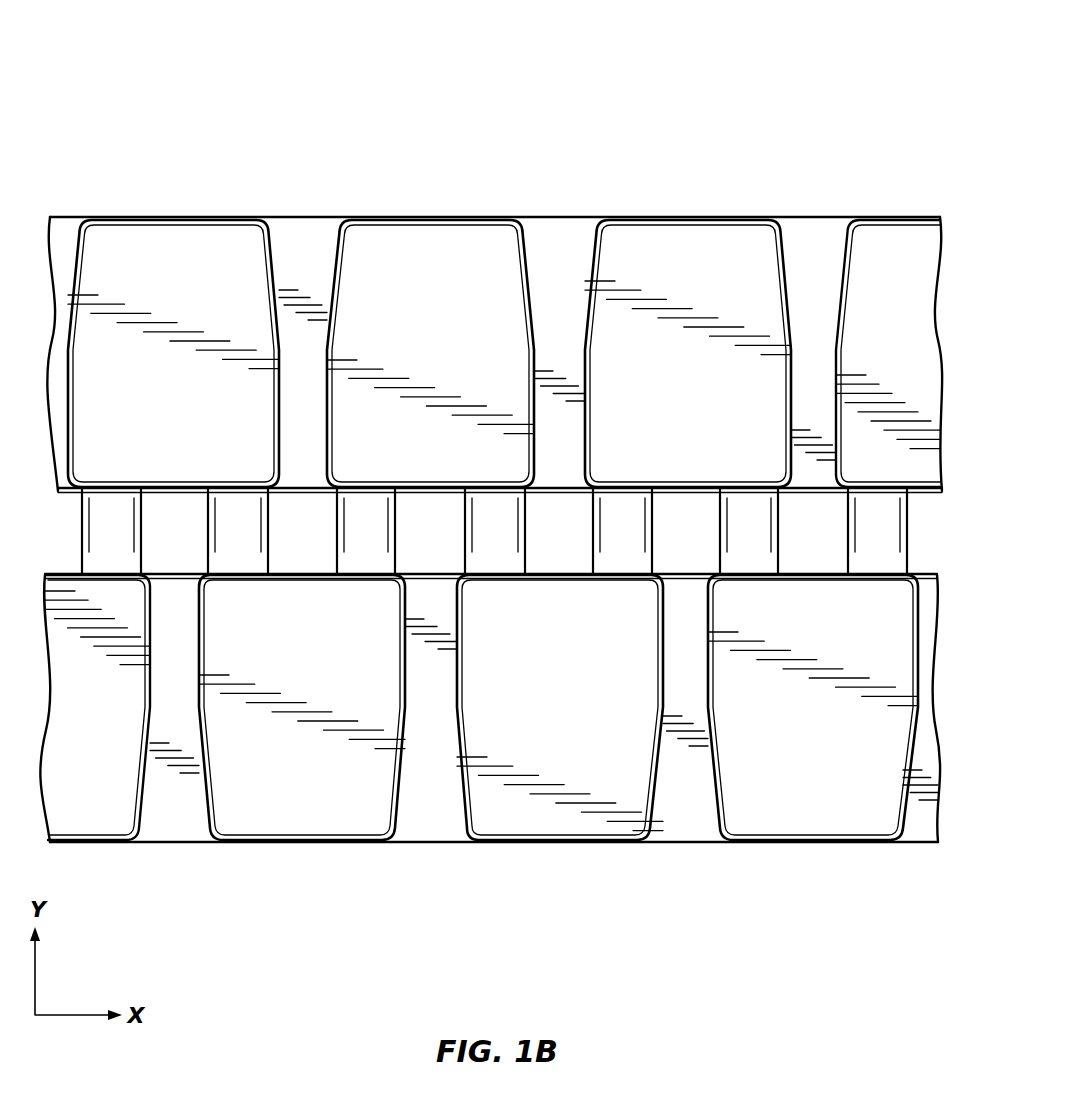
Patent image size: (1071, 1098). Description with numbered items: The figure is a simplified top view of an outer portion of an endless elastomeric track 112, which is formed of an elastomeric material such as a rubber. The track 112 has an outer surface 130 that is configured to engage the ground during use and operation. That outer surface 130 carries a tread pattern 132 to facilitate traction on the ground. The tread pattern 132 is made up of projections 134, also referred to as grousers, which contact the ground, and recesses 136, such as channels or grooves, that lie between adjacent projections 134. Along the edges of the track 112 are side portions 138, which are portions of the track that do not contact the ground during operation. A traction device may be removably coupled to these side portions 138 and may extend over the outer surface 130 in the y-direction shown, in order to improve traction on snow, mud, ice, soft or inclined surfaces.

The elastomeric track 112 is at (322, 168).
The outer surface 130 is at (692, 245).
The tread pattern 132 is at (509, 195).
The projections 134 is at (157, 268).
The recesses 136 is at (820, 255).
The side portions 138 is at (412, 216).